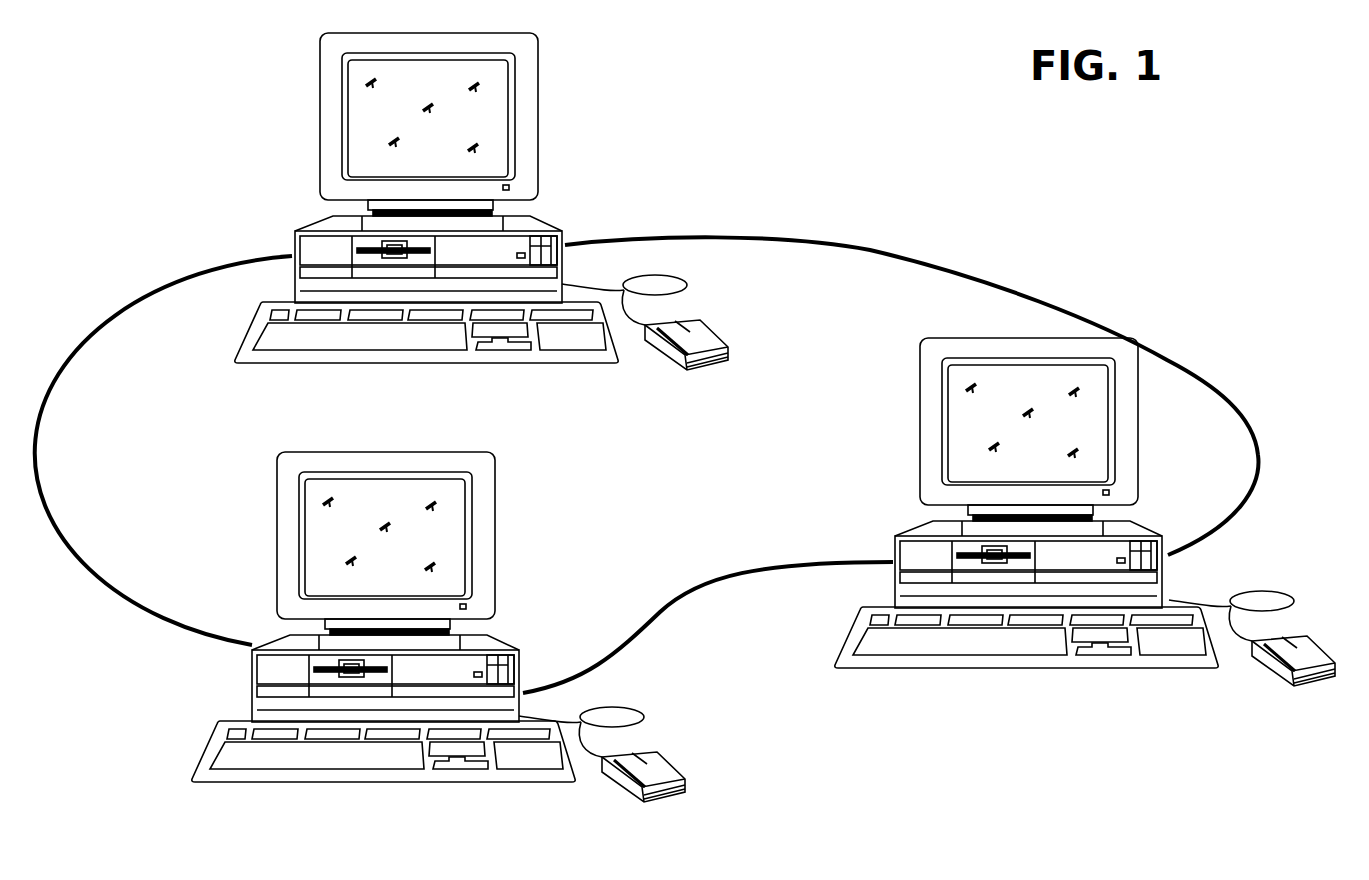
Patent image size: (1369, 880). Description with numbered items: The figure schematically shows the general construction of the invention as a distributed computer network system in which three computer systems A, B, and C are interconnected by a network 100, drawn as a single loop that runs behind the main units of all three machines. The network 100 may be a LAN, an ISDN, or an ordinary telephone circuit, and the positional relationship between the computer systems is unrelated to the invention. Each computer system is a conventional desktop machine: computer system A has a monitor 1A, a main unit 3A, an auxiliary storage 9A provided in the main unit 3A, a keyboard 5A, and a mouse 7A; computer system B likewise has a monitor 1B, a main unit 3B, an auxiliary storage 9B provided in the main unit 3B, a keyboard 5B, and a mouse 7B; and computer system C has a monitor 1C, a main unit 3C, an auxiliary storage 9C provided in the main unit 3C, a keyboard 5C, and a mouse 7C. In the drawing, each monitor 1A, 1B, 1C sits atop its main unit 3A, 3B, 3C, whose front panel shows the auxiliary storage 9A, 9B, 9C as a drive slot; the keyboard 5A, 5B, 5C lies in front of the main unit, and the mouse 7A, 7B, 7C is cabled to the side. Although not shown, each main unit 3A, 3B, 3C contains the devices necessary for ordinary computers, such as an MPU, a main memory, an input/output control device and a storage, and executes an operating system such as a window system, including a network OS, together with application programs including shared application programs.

The network 100 is at (872, 249).
The computer system A is at (450, 639).
The computer system B is at (456, 215).
The computer system C is at (1066, 516).
The monitor 1A is at (425, 543).
The monitor 1B is at (540, 96).
The monitor 1C is at (973, 429).
The main unit 3A is at (405, 648).
The main unit 3B is at (295, 232).
The main unit 3C is at (964, 550).
The keyboard 5A is at (383, 787).
The keyboard 5B is at (285, 366).
The keyboard 5C is at (1026, 666).
The mouse 7A is at (618, 754).
The mouse 7B is at (710, 337).
The mouse 7C is at (1267, 638).
The auxiliary storage 9A is at (284, 619).
The auxiliary storage 9B is at (372, 246).
The auxiliary storage 9C is at (913, 507).